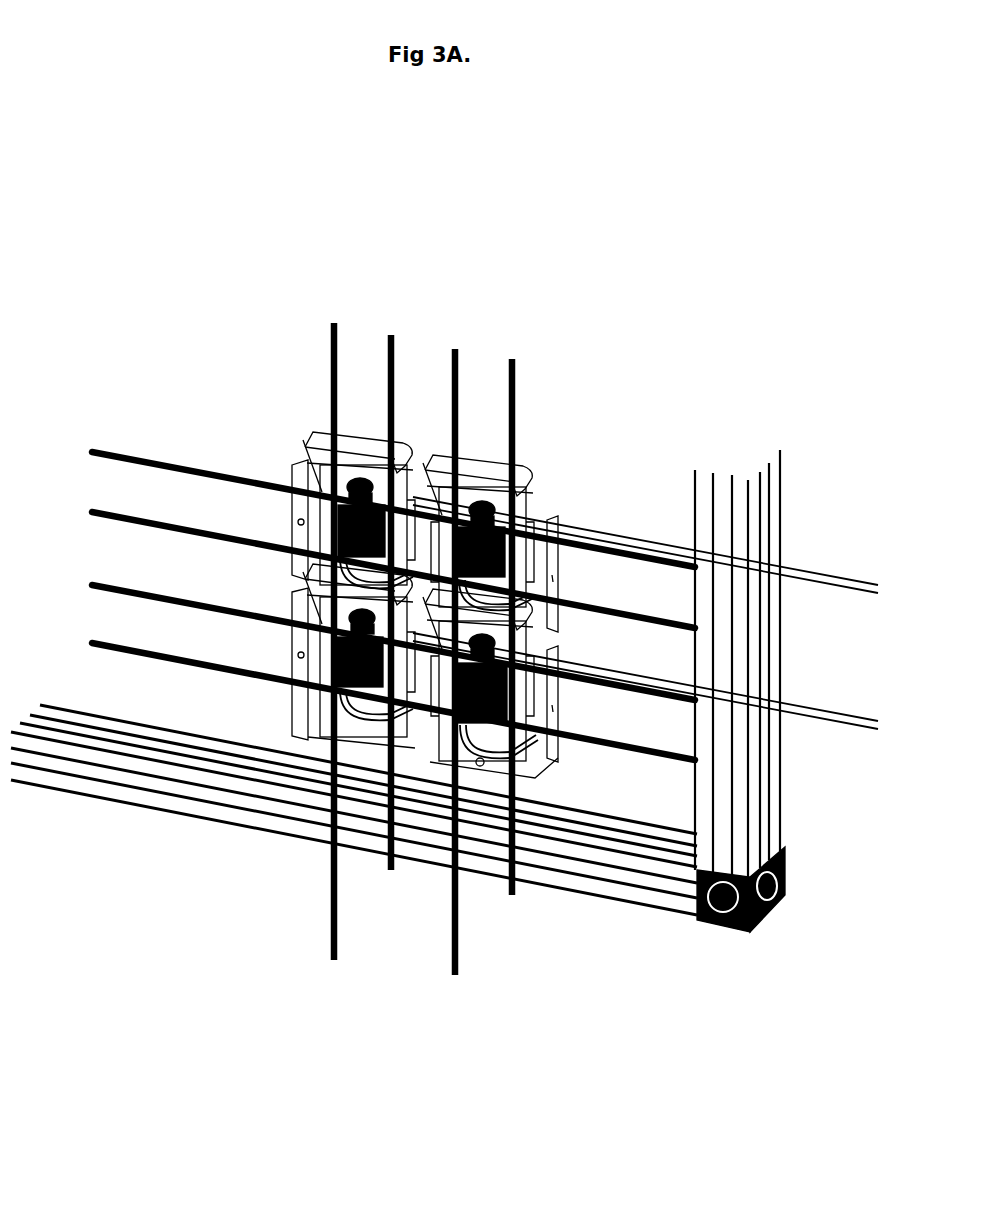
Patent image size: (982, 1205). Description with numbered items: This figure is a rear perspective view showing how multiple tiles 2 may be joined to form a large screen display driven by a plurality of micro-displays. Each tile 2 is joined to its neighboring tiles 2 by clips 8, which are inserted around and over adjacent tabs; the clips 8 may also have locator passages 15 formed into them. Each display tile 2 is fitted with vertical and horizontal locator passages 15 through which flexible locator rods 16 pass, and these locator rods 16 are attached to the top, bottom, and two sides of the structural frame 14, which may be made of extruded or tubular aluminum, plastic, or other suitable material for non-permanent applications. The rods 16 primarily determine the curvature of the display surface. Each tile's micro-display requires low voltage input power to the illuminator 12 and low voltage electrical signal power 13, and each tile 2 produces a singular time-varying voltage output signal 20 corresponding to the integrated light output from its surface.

The tile 2 is at (565, 647).
The clip 8 is at (541, 476).
The low voltage input power to the illuminator 12 is at (386, 869).
The low voltage electrical signal power 13 is at (852, 598).
The structural frame 14 is at (153, 801).
The locator passage 15 is at (300, 654).
The locator rod 16 is at (213, 473).
The time-varying voltage output signal 20 is at (328, 942).